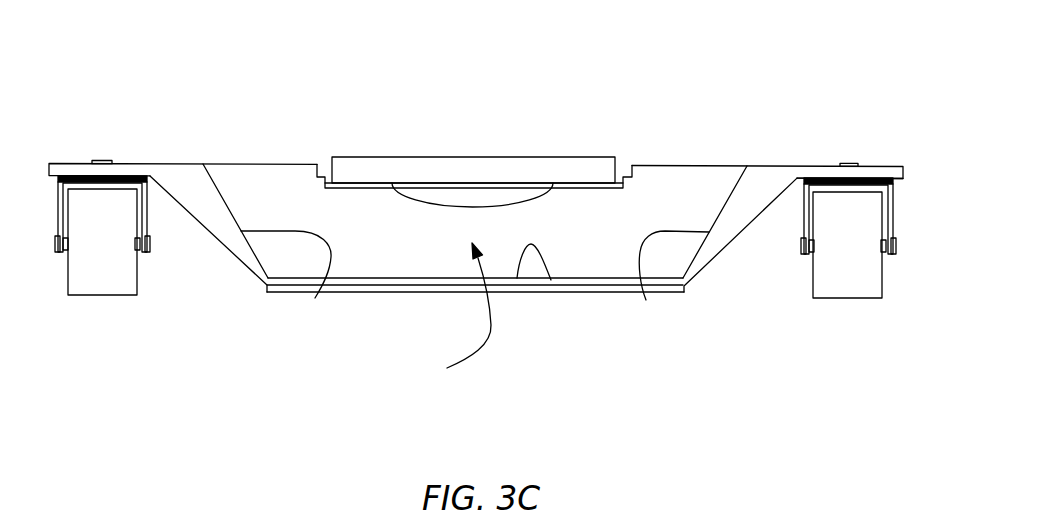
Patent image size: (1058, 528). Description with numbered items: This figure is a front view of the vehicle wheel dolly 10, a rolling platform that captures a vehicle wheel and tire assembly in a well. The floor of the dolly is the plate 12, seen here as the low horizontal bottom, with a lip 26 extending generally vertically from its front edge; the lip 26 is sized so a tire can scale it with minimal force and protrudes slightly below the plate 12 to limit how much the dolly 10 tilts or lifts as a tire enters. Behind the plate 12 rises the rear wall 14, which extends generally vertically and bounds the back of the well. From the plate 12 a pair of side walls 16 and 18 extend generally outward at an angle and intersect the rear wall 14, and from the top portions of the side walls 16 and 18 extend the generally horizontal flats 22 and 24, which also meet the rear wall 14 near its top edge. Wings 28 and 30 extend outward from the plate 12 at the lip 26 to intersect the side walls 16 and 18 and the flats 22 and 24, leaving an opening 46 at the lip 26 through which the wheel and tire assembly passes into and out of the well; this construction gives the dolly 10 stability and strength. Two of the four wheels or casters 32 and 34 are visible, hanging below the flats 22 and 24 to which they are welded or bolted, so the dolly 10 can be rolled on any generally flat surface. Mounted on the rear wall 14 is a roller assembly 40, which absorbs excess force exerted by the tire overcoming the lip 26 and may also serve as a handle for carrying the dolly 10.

The vehicle wheel dolly 10 is at (682, 62).
The plate 12 is at (551, 280).
The rear wall 14 is at (660, 197).
The side wall 16 is at (646, 300).
The side wall 18 is at (315, 298).
The flat 22 is at (802, 167).
The flat 24 is at (140, 164).
The lip 26 is at (420, 292).
The wing 28 is at (743, 210).
The wing 30 is at (203, 203).
The wheel or caster 32 is at (845, 262).
The wheel or caster 34 is at (102, 263).
The roller assembly 40 is at (525, 168).
The opening 46 is at (453, 312).